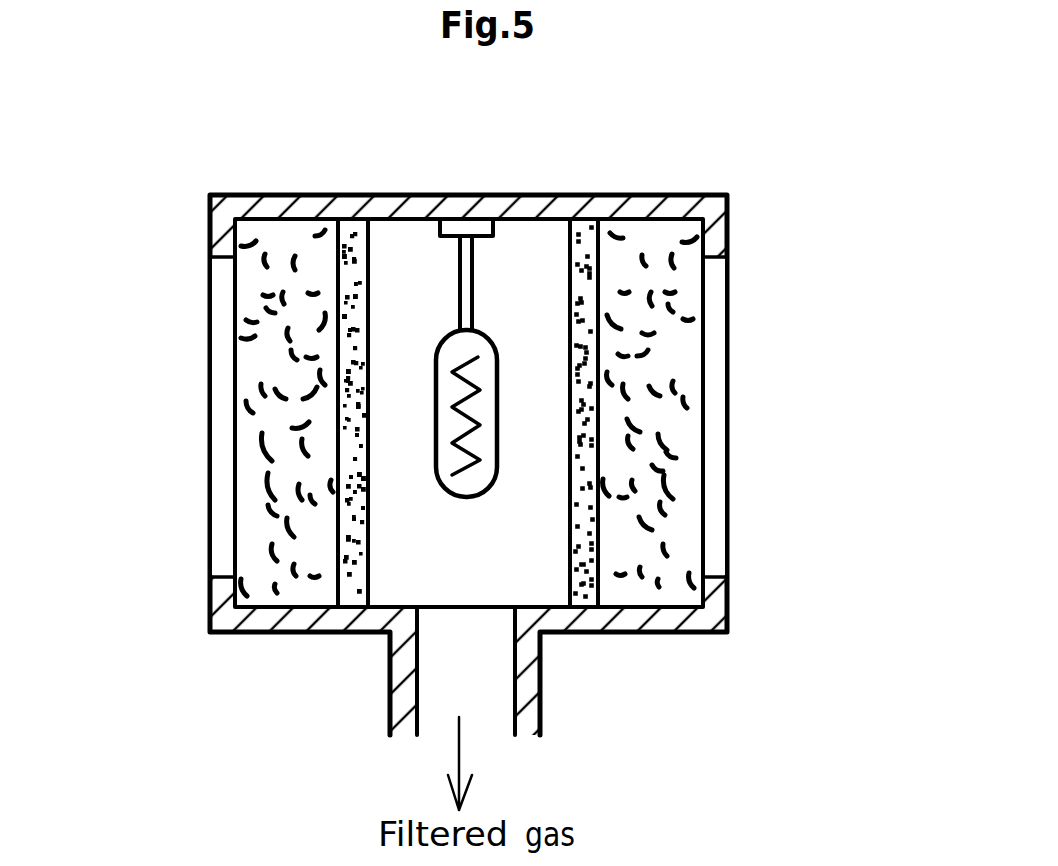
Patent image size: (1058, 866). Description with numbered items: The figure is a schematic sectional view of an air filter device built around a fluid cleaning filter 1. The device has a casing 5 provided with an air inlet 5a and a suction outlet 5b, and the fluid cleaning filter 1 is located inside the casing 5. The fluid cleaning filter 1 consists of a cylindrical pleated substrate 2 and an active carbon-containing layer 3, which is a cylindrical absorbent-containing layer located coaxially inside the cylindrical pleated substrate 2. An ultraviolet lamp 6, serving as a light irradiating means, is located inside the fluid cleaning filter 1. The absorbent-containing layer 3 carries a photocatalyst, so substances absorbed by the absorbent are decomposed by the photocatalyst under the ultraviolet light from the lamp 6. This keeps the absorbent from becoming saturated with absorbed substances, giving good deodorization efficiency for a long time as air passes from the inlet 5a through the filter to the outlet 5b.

The fluid cleaning filter 1 is at (710, 343).
The cylindrical pleated substrate 2 is at (278, 265).
The active carbon-containing layer 3 is at (355, 263).
The casing 5 is at (774, 220).
The air inlet 5a is at (218, 420).
The suction outlet 5b is at (490, 707).
The ultraviolet lamp 6 is at (497, 463).